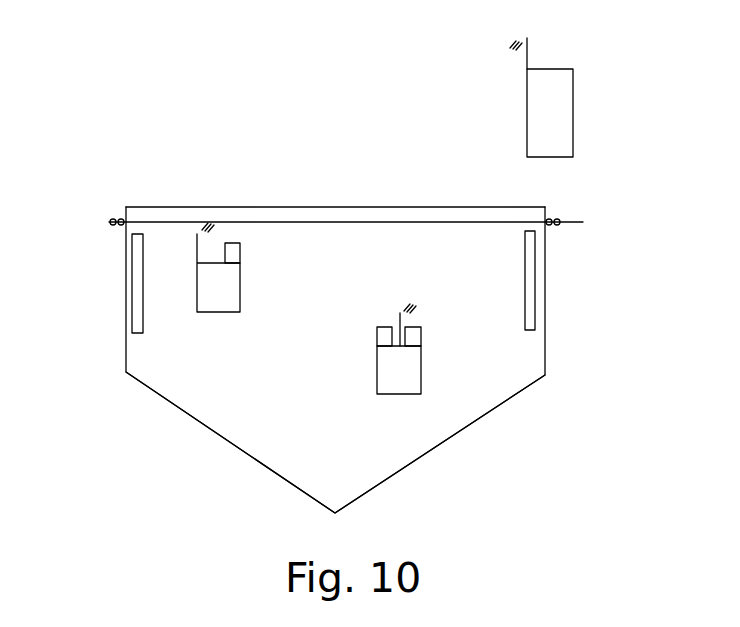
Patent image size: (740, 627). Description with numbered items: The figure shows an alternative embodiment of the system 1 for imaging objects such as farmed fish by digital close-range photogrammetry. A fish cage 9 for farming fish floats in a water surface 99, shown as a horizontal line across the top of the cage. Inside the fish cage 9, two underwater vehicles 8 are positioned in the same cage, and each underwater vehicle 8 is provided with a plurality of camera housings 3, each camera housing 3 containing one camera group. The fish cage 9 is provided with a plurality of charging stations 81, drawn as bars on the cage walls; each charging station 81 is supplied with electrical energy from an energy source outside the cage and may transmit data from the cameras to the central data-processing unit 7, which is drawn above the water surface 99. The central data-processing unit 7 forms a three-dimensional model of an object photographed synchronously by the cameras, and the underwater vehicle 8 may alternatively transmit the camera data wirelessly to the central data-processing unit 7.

The system 1 is at (212, 105).
The camera housing 3 is at (231, 244).
The central data-processing unit 7 is at (548, 108).
The underwater vehicle 8 is at (215, 294).
The fish cage 9 is at (340, 425).
The charging station 81 is at (137, 253).
The water surface 99 is at (567, 222).